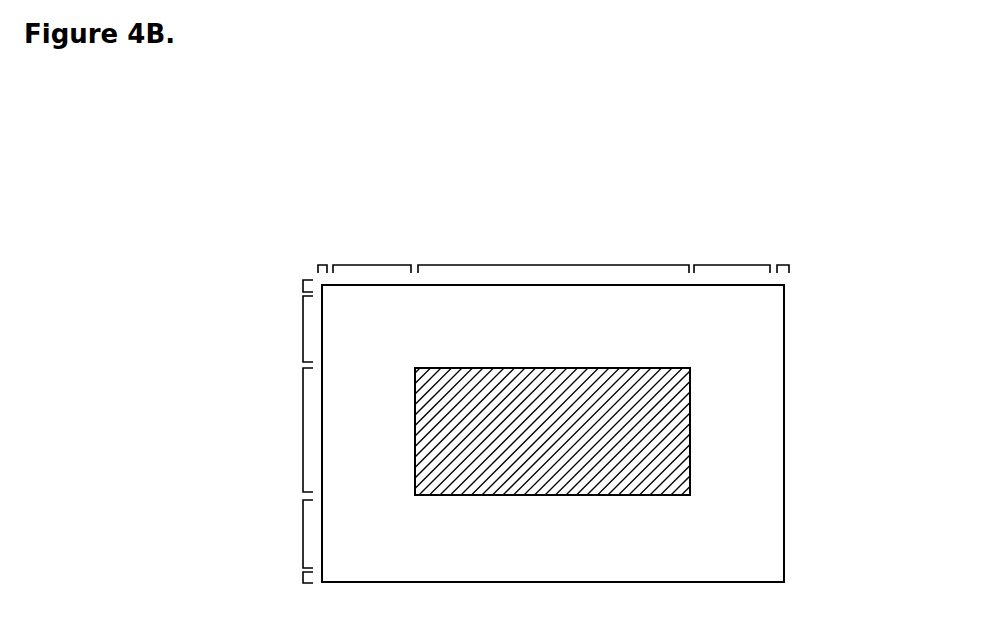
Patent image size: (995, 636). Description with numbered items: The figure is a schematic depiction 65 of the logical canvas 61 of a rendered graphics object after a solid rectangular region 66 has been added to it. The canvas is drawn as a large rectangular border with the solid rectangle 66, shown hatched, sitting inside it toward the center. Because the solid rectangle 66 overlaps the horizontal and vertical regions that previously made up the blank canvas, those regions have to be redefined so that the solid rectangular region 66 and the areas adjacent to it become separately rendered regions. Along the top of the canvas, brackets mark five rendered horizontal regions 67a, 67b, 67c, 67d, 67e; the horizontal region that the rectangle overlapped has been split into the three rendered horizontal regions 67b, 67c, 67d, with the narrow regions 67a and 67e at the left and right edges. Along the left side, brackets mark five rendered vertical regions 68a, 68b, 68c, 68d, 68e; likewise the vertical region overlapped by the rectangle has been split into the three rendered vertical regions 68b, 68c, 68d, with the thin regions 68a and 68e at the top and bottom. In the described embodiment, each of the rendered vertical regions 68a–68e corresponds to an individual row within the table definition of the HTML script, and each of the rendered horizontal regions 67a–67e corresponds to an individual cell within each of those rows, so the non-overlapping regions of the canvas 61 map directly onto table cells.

The depiction 65 is at (190, 172).
The logical canvas 61 is at (784, 345).
The solid rectangular region 66 is at (690, 432).
The rendered horizontal region 67a is at (322, 265).
The rendered horizontal region 67b is at (372, 264).
The rendered horizontal region 67c is at (552, 264).
The rendered horizontal region 67d is at (736, 264).
The rendered horizontal region 67e is at (783, 265).
The rendered vertical region 68a is at (300, 286).
The rendered vertical region 68b is at (300, 327).
The rendered vertical region 68c is at (300, 432).
The rendered vertical region 68d is at (300, 535).
The rendered vertical region 68e is at (300, 578).